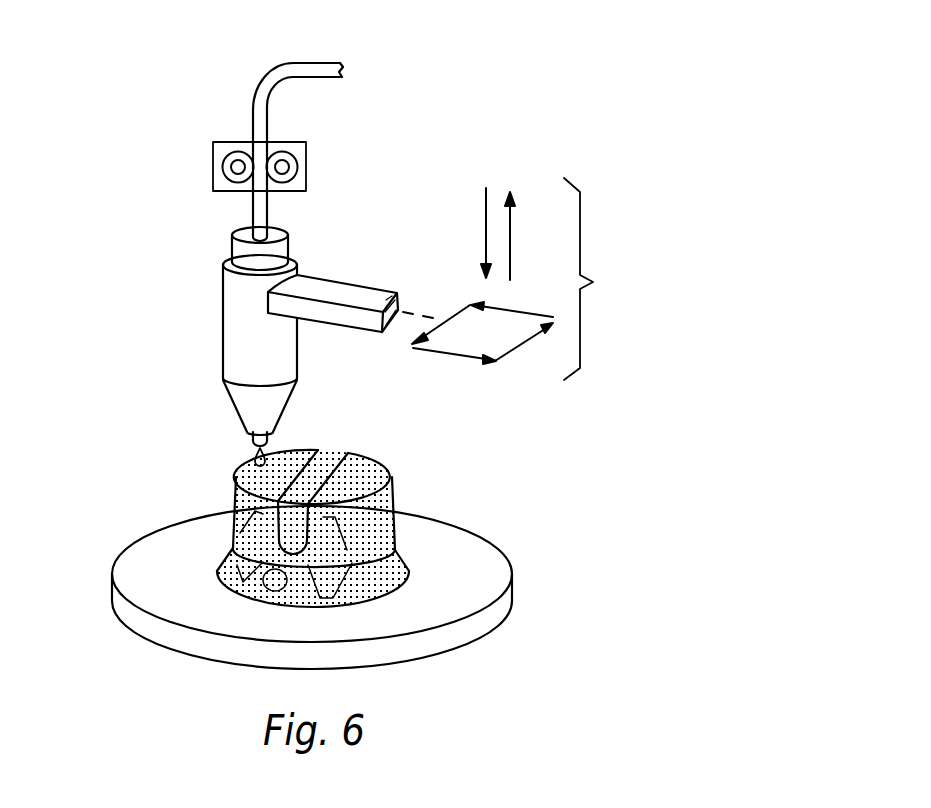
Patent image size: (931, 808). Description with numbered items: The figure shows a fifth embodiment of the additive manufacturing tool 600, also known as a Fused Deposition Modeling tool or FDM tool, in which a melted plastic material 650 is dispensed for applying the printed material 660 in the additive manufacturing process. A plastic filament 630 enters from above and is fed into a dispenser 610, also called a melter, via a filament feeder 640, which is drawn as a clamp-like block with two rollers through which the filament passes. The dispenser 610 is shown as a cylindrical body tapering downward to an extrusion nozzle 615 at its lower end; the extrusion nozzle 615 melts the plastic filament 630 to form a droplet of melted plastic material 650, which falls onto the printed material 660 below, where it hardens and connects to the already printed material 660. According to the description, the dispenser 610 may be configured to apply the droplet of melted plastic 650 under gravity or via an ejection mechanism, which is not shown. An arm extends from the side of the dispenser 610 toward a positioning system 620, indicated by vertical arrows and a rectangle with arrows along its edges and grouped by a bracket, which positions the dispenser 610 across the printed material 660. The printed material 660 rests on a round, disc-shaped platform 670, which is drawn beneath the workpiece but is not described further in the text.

The additive manufacturing tool 600 is at (517, 78).
The dispenser 610 is at (238, 322).
The extrusion nozzle 615 is at (250, 438).
The positioning system 620 is at (523, 279).
The plastic filament 630 is at (258, 88).
The filament feeder 640 is at (215, 156).
The melted plastic material 650 is at (250, 458).
The printed material 660 is at (386, 523).
The build platform 670 is at (138, 550).